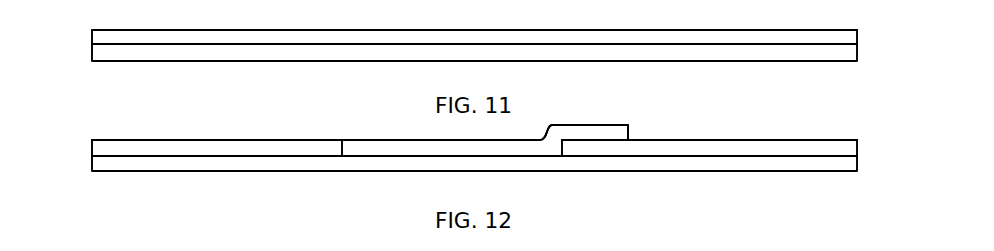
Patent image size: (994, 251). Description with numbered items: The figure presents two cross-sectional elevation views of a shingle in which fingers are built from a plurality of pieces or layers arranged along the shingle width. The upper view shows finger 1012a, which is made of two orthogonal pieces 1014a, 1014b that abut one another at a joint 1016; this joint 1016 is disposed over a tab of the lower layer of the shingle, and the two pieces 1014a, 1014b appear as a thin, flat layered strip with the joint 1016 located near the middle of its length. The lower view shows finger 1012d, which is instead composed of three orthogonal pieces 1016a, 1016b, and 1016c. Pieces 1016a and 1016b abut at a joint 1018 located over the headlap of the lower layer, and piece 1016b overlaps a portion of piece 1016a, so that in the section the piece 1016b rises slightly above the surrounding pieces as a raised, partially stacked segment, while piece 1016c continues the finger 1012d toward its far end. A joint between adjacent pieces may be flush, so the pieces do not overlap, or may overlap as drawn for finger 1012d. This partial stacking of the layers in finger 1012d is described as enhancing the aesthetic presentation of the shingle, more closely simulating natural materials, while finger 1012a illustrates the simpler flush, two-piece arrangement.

In FIG. 11, the finger 1012a is at (113, 83).
In FIG. 11, the orthogonal piece 1014a is at (120, 30).
In FIG. 11, the orthogonal piece 1014b is at (831, 30).
In FIG. 11, the joint 1016 is at (508, 44).
In FIG. 12, the finger 1012d is at (839, 185).
In FIG. 12, the orthogonal piece 1016a is at (223, 140).
In FIG. 12, the orthogonal piece 1016b is at (592, 134).
In FIG. 12, the orthogonal piece 1016c is at (782, 148).
In FIG. 12, the joint 1018 is at (342, 140).